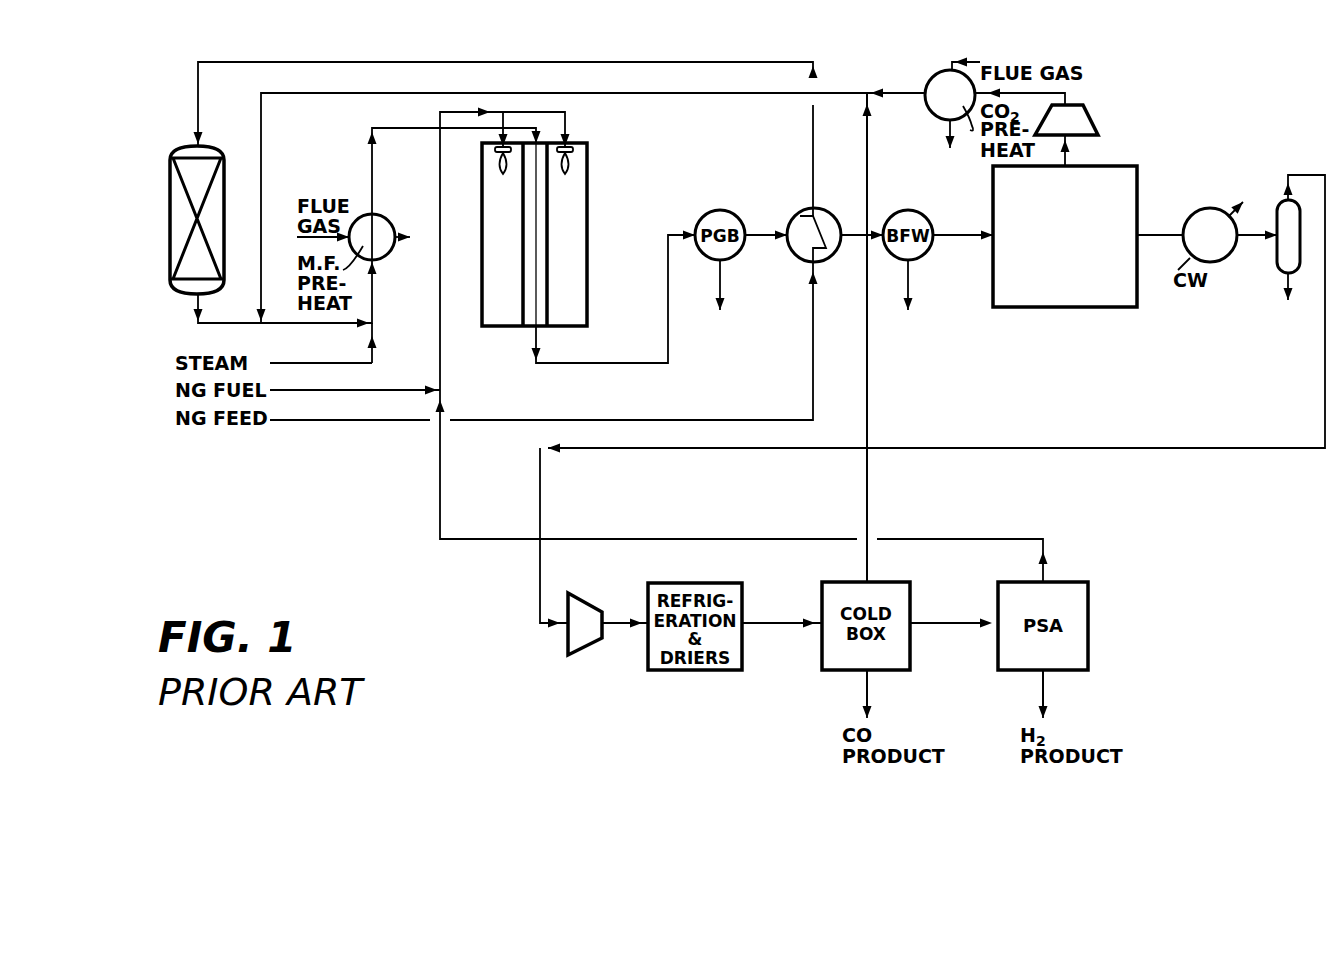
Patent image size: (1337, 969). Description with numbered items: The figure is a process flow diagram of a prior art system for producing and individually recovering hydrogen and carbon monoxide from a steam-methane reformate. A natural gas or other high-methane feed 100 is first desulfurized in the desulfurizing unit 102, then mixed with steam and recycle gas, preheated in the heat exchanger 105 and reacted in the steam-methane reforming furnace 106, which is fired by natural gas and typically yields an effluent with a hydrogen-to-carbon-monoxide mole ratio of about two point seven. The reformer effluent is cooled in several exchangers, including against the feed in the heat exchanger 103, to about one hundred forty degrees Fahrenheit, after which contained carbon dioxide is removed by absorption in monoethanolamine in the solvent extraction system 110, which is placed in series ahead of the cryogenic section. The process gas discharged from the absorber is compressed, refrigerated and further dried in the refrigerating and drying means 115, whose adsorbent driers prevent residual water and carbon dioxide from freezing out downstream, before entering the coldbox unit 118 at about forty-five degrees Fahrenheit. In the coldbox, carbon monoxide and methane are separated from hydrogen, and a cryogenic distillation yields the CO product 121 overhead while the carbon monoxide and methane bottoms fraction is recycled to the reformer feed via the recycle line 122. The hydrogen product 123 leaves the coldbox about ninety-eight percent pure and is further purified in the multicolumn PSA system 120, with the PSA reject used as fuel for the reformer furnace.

The natural gas feed 100 is at (372, 420).
The desulfurizing unit 102 is at (170, 240).
The heat exchanger 103 is at (791, 254).
The heat exchanger 105 is at (358, 248).
The reforming furnace 106 is at (587, 193).
The solvent extraction system 110 is at (1050, 285).
The means for refrigerating and drying 115 is at (701, 672).
The coldbox unit 118 is at (917, 600).
The multicolumn PSA system 120 is at (1062, 676).
The CO product 121 is at (871, 688).
The recycle line 122 is at (869, 493).
The hydrogen product 123 is at (974, 613).